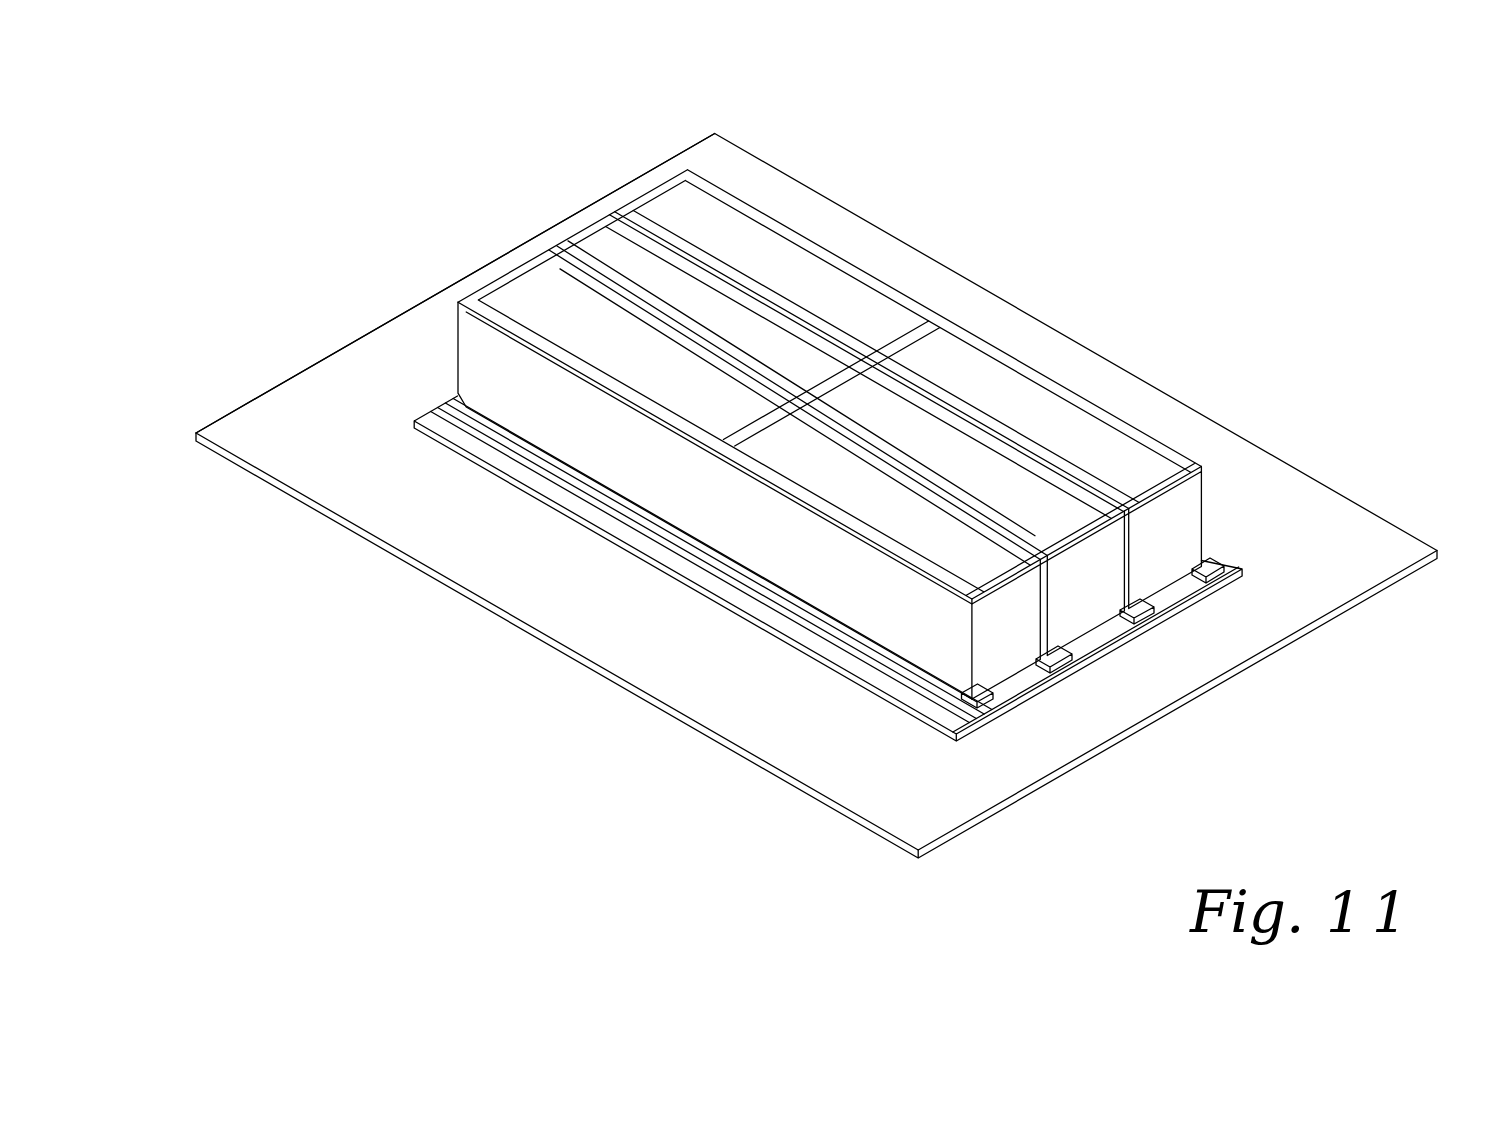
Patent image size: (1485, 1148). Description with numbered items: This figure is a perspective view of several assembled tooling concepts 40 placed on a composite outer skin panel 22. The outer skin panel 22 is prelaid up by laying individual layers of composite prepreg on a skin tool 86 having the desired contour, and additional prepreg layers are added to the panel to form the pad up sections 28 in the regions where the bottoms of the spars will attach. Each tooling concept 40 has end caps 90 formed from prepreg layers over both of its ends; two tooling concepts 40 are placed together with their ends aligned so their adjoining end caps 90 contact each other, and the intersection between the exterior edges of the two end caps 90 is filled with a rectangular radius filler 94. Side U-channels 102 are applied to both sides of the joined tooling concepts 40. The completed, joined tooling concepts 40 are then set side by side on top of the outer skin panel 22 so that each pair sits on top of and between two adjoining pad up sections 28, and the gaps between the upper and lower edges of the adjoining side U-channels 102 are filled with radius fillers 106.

The outer skin panel 22 is at (938, 741).
The skin tool 86 is at (340, 505).
The tooling concept 40 is at (617, 265).
The end cap 90 is at (655, 193).
The rectangular radius filler 94 is at (818, 388).
The side U-channel 102 is at (545, 267).
The radius filler 106 is at (1121, 500).
The pad up section 28 is at (1233, 567).